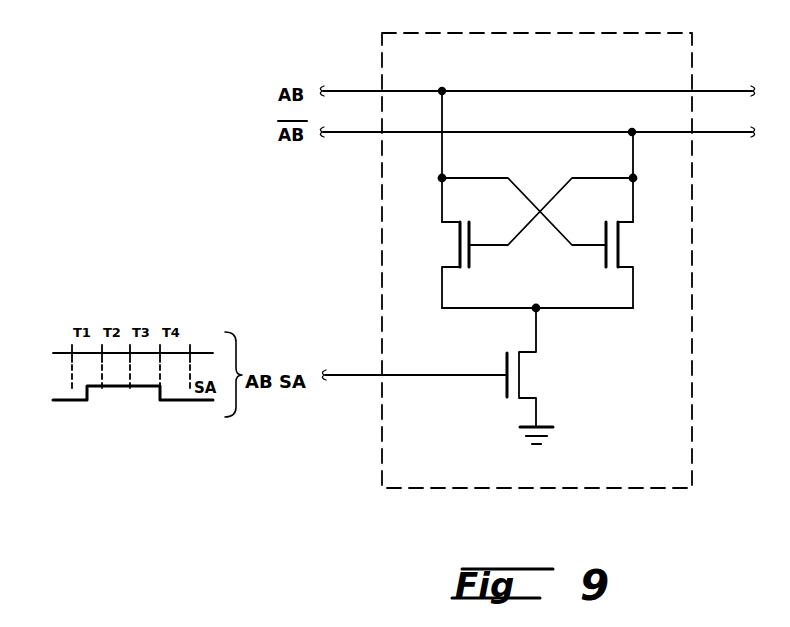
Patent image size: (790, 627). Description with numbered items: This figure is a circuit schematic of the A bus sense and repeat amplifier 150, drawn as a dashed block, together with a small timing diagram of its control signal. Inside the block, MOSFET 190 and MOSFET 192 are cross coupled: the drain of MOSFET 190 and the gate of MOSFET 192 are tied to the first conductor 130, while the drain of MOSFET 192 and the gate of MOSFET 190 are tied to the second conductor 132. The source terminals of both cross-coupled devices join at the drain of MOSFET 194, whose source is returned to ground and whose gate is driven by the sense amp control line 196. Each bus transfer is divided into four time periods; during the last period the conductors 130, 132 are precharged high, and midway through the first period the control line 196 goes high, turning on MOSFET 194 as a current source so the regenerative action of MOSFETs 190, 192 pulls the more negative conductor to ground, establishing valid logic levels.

The sense and repeat amplifier 150 is at (601, 34).
The first conductor 130 is at (541, 90).
The second conductor 132 is at (655, 131).
The MOSFET 190 is at (483, 219).
The MOSFET 192 is at (605, 234).
The MOSFET 194 is at (505, 361).
The sense amp control line 196 is at (448, 374).